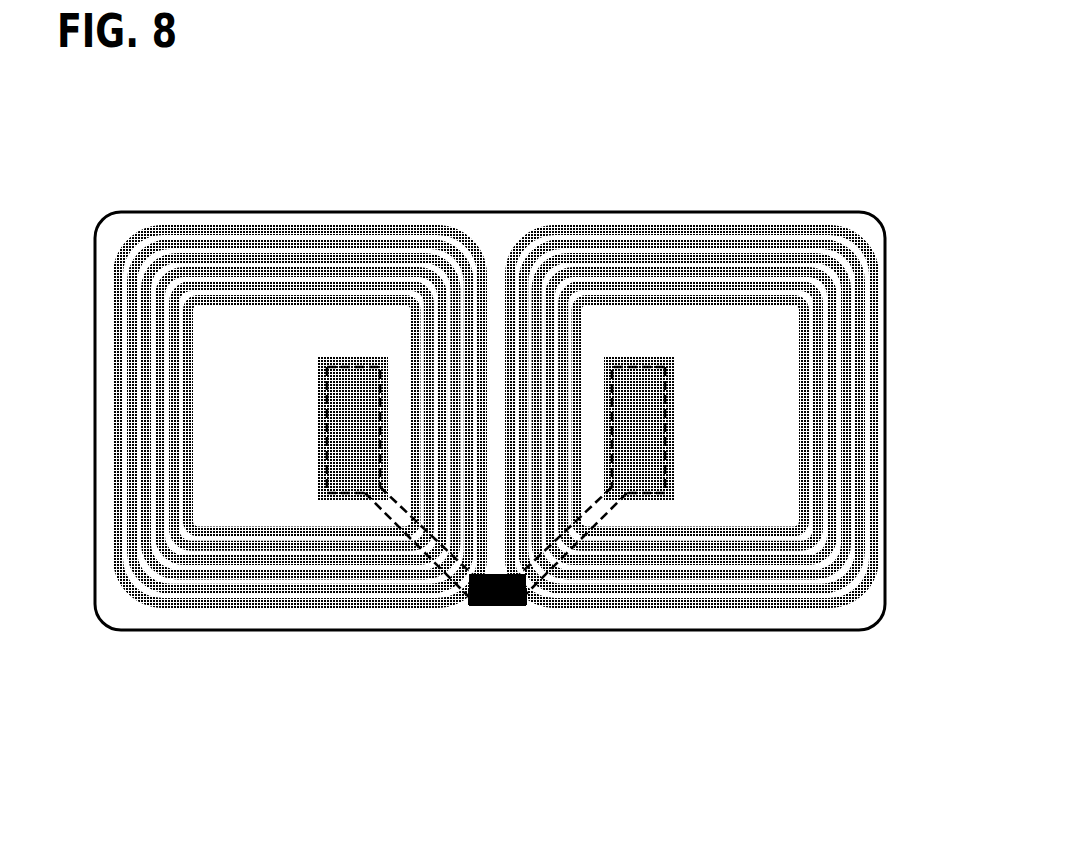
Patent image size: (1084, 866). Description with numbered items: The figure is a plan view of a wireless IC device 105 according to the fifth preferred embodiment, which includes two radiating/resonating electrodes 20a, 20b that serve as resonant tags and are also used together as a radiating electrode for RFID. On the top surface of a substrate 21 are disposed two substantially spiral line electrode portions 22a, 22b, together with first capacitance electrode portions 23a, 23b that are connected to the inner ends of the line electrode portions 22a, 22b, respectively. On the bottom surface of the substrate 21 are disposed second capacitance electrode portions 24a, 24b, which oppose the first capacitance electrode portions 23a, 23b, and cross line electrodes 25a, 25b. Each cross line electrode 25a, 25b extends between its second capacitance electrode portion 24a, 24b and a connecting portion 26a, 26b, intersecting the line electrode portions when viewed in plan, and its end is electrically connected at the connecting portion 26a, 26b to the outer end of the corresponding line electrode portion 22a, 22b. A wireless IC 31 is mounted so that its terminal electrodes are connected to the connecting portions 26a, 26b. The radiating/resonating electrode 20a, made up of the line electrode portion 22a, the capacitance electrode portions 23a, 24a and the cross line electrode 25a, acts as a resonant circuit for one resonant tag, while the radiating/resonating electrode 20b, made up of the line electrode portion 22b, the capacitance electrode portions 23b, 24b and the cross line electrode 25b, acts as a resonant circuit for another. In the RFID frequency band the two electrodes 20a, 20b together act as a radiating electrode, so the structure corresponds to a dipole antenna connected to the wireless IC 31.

The wireless IC device 105 is at (849, 142).
The substrate 21 is at (544, 212).
The radiating/resonating electrode 20a is at (368, 703).
The radiating/resonating electrode 20b is at (873, 703).
The line electrode portion 22a is at (177, 602).
The line electrode portion 22b is at (813, 602).
The first capacitance electrode portion 23a is at (317, 437).
The first capacitance electrode portion 23b is at (673, 437).
The second capacitance electrode portion 24a is at (320, 497).
The second capacitance electrode portion 24b is at (670, 497).
The cross line electrode 25a is at (383, 497).
The cross line electrode 25b is at (607, 497).
The connecting portion 26a is at (465, 597).
The connecting portion 26b is at (530, 597).
The wireless IC 31 is at (497, 605).